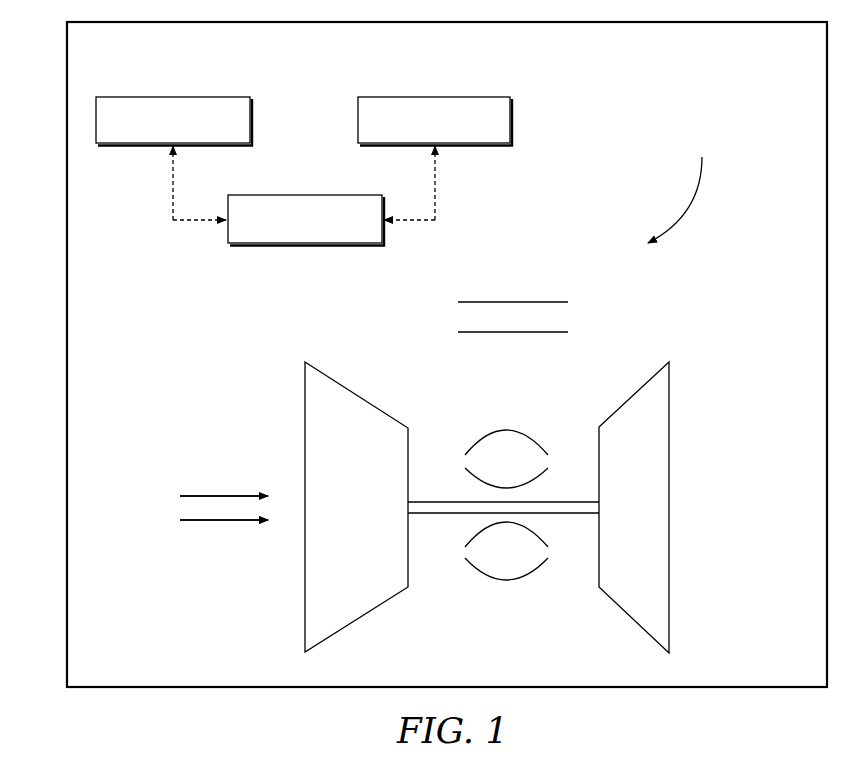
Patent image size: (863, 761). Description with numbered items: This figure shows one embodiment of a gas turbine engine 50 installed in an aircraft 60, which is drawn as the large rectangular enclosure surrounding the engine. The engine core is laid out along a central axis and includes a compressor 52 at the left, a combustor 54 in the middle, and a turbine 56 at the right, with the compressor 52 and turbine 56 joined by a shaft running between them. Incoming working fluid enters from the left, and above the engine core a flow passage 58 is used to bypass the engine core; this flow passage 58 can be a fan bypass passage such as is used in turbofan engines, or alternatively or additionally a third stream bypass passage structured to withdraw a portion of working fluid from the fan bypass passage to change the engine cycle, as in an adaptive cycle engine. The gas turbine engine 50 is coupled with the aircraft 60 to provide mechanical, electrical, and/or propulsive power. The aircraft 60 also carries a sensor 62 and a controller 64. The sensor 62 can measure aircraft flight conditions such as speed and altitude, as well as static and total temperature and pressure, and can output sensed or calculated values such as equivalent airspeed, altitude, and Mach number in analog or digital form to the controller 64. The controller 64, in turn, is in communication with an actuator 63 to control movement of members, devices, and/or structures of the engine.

The gas turbine engine 50 is at (682, 186).
The compressor 52 is at (355, 615).
The combustor 54 is at (505, 580).
The turbine 56 is at (635, 622).
The flow passage 58 is at (478, 302).
The aircraft 60 is at (68, 355).
The sensor 62 is at (145, 97).
The actuator 63 is at (408, 97).
The controller 64 is at (275, 195).